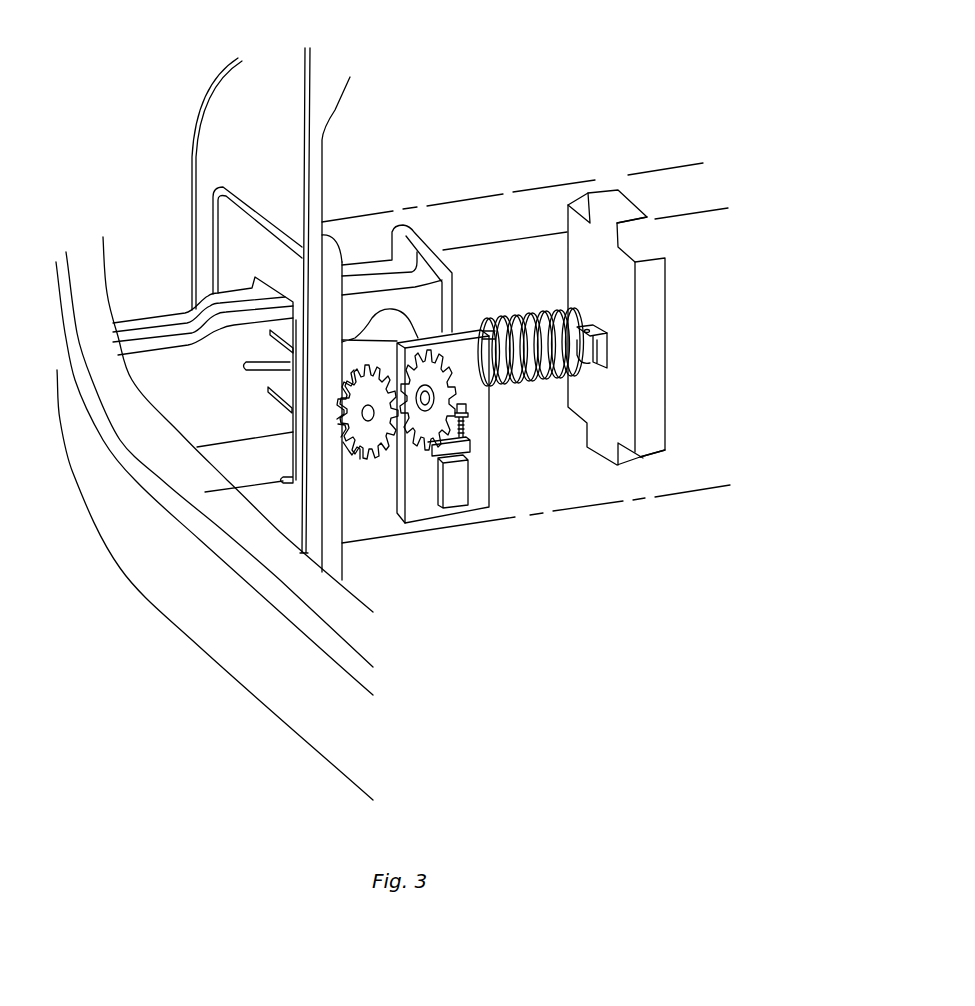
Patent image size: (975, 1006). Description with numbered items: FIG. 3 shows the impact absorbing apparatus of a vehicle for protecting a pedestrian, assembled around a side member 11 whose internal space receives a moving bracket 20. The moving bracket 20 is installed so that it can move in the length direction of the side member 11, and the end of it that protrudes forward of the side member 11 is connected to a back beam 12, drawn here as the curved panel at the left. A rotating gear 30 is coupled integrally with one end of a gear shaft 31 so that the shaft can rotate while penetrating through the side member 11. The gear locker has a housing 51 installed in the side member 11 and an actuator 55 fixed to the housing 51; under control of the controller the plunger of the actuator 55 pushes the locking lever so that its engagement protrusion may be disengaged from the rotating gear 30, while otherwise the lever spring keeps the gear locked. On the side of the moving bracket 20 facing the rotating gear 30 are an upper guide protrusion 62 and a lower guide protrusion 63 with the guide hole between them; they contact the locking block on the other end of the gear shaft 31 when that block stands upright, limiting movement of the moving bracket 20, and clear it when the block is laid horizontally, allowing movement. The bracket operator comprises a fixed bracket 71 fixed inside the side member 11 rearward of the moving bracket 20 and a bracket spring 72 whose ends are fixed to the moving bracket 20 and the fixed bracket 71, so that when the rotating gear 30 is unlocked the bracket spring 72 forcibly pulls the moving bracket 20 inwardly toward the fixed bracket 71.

The side member 11 is at (603, 507).
The back beam 12 is at (320, 725).
The moving bracket 20 is at (163, 317).
The rotating gear 30 is at (372, 440).
The gear shaft 31 is at (366, 428).
The housing 51 is at (423, 510).
The actuator 55 is at (463, 490).
The upper guide protrusion 62 is at (370, 343).
The lower guide protrusion 63 is at (285, 393).
The fixed bracket 71 is at (612, 203).
The bracket spring 72 is at (543, 310).